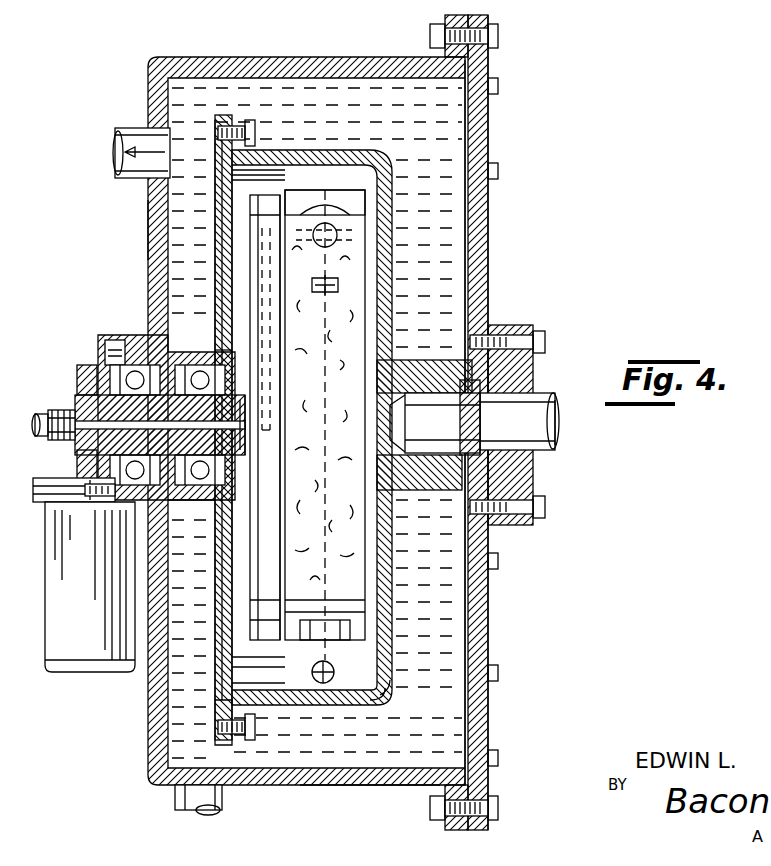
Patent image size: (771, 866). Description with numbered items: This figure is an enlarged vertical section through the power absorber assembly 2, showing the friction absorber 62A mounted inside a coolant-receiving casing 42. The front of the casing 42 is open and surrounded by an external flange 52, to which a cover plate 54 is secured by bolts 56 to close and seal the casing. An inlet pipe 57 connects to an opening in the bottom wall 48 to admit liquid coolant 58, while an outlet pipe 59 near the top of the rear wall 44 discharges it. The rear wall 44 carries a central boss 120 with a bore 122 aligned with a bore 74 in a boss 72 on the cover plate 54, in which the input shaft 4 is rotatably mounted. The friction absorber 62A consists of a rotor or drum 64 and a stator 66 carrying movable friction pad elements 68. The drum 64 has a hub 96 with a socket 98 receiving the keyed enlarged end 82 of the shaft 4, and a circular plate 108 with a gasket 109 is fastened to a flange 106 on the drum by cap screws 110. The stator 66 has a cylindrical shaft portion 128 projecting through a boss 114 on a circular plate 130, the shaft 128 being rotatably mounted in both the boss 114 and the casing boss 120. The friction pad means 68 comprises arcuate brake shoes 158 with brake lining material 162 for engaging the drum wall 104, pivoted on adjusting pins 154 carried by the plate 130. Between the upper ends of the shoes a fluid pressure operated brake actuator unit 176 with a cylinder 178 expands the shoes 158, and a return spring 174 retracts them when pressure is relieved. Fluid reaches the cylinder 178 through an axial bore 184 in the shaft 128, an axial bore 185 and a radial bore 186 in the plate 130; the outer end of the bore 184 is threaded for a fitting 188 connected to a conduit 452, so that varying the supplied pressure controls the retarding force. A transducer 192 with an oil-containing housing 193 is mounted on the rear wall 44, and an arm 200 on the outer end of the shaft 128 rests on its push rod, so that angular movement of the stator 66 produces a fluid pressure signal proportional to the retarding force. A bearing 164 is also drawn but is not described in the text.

The power absorber assembly 2 is at (520, 116).
The input shaft 4 is at (547, 400).
The coolant-receiving casing 42 is at (219, 47).
The rear wall 44 is at (150, 215).
The bottom wall 48 is at (373, 786).
The external flange 52 is at (455, 826).
The cover plate 54 is at (488, 210).
The bolts 56 is at (500, 40).
The inlet pipe 57 is at (190, 800).
The liquid coolant 58 is at (444, 618).
The outlet pipe 59 is at (120, 135).
The friction absorber 62A is at (336, 140).
The rotor element or drum 64 is at (393, 696).
The stator element 66 is at (252, 638).
The friction pad elements 68 is at (366, 518).
The boss 72 is at (498, 330).
The bore 74 is at (519, 421).
The enlarged end 82 is at (435, 417).
The hub 96 is at (430, 372).
The socket 98 is at (428, 462).
The drum wall 104 is at (385, 142).
The flange 106 is at (240, 740).
The circular plate 108 is at (216, 222).
The gasket 109 is at (222, 135).
The cap screws 110 is at (256, 132).
The boss 114 is at (190, 350).
The central boss 120 is at (140, 335).
The bore 122 is at (191, 513).
The cylindrical shaft portion 128 is at (70, 428).
The circular plate 130 is at (254, 270).
The adjusting pins 154 is at (365, 585).
The brake shoes 158 is at (365, 620).
The brake lining material 162 is at (356, 255).
The ball bearing 164 is at (175, 430).
The return spring 174 is at (340, 285).
The brake actuator unit 176 is at (358, 208).
The cylinder 178 is at (340, 238).
The axial bore 184 is at (160, 428).
The axial bore 185 is at (262, 435).
The radial bore 186 is at (260, 295).
The fitting 188 is at (80, 392).
The transducer 192 is at (98, 676).
The housing 193 is at (110, 675).
The arm 200 is at (105, 350).
The conduit 452 is at (50, 420).